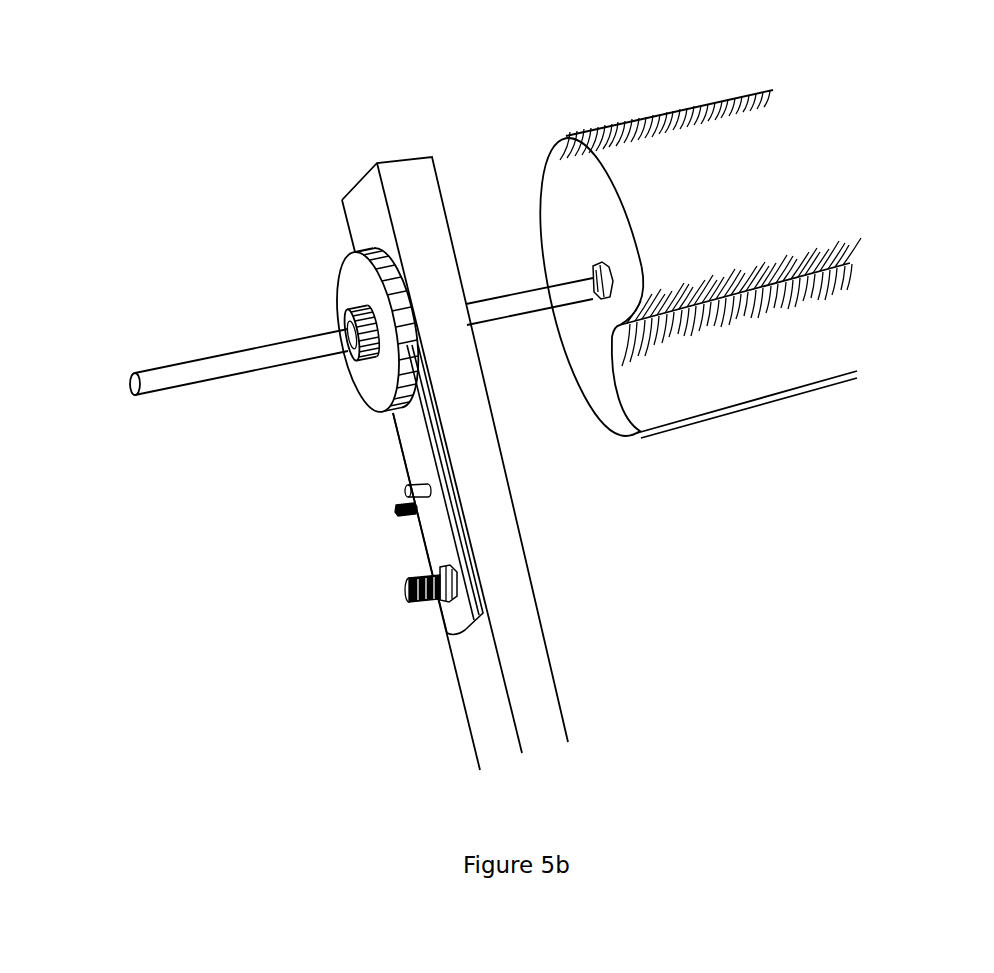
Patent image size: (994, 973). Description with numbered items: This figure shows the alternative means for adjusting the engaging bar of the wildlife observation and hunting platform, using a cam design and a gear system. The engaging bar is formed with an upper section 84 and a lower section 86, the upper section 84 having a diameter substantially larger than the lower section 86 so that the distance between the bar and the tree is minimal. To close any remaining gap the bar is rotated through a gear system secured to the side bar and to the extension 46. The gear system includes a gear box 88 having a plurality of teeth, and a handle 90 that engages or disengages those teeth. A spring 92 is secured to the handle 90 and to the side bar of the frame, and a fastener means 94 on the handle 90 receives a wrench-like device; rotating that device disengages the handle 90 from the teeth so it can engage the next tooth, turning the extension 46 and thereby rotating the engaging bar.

The extension 46 is at (210, 368).
The upper section 84 is at (578, 178).
The lower section 86 is at (607, 410).
The gear box 88 is at (355, 250).
The handle 90 is at (418, 445).
The spring 92 is at (405, 497).
The fastener means 94 is at (438, 600).